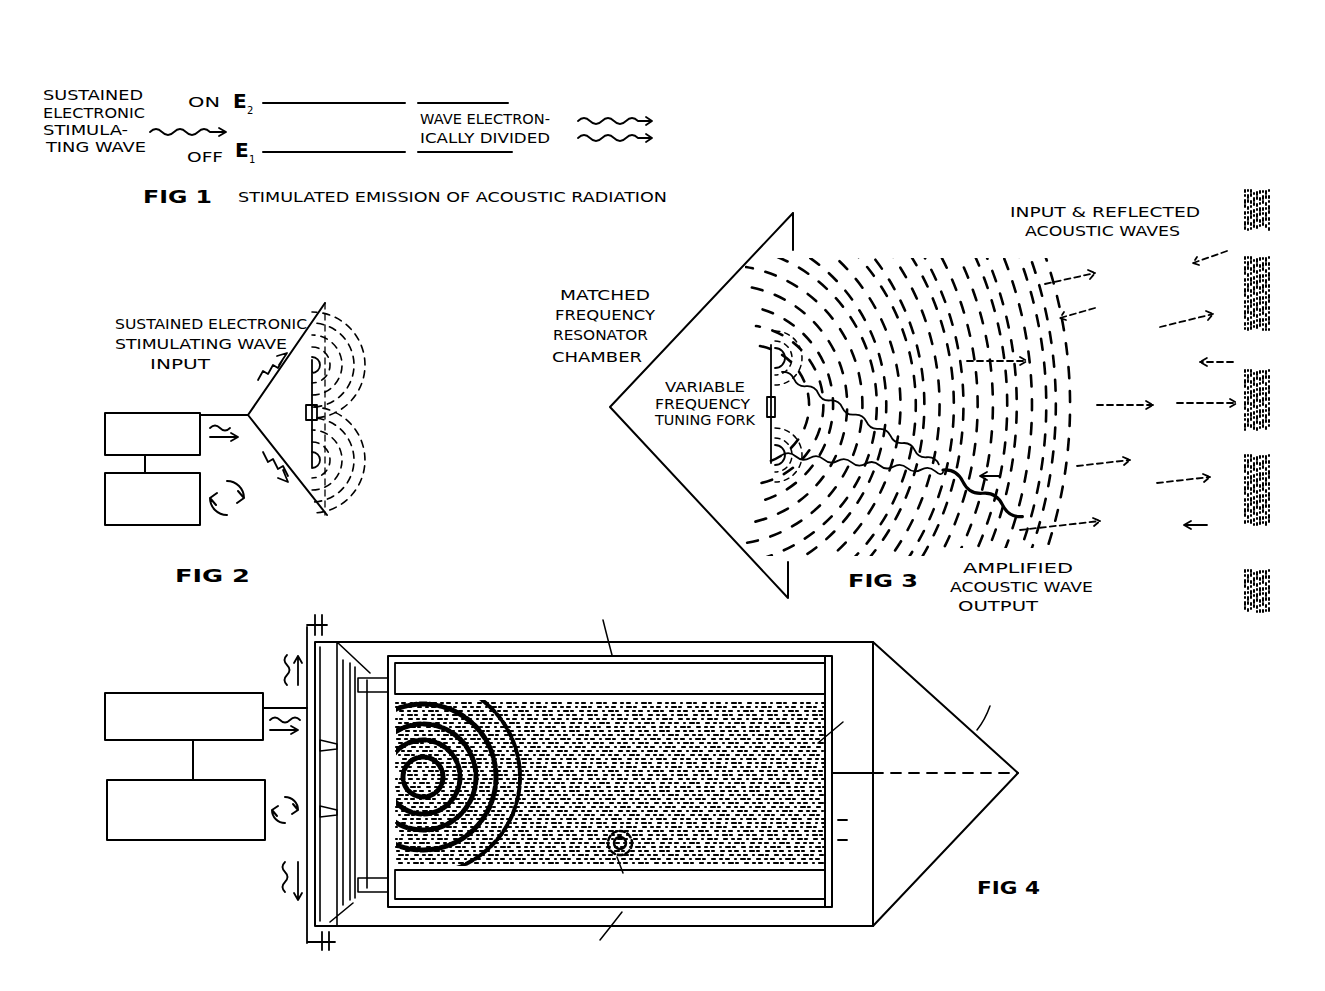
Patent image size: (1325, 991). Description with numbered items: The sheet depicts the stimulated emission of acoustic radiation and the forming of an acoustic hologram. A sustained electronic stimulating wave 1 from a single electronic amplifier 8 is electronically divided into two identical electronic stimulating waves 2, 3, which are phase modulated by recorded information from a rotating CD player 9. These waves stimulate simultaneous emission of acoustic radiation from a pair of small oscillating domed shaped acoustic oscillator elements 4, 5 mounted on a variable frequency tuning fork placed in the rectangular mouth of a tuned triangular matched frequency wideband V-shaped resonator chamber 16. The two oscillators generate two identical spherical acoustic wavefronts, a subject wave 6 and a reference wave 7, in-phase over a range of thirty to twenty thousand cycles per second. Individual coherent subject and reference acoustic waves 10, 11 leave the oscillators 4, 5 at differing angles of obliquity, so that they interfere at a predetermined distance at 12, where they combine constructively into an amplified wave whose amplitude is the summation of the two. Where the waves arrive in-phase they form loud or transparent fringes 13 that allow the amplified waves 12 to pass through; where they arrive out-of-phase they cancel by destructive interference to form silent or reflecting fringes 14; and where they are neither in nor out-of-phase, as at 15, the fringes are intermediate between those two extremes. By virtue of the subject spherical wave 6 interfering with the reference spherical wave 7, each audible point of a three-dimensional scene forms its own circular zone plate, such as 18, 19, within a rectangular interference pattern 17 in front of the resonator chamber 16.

In FIG. 1, the sustained electronic stimulating wave 1 is at (188, 145).
In FIG. 2, the sustained electronic stimulating wave 1 is at (224, 447).
In FIG. 4, the sustained electronic stimulating wave 1 is at (285, 741).
In FIG. 1, the electronic stimulating wave 2 is at (615, 106).
In FIG. 2, the electronic stimulating wave 2 is at (264, 378).
In FIG. 4, the electronic stimulating wave 2 is at (294, 681).
In FIG. 1, the electronic stimulating wave 3 is at (615, 150).
In FIG. 2, the electronic stimulating wave 3 is at (266, 456).
In FIG. 4, the electronic stimulating wave 3 is at (293, 868).
In FIG. 2, the acoustic dome oscillator 4 is at (306, 409).
In FIG. 3, the acoustic dome oscillator 4 is at (775, 397).
In FIG. 4, the acoustic dome oscillator 4 is at (610, 644).
In FIG. 2, the acoustic dome oscillator 5 is at (305, 457).
In FIG. 3, the acoustic dome oscillator 5 is at (775, 455).
In FIG. 4, the acoustic dome oscillator 5 is at (610, 910).
In FIG. 2, the subject wave 6 is at (338, 359).
In FIG. 3, the subject wave 6 is at (963, 429).
In FIG. 2, the reference wave 7 is at (338, 464).
In FIG. 3, the reference wave 7 is at (837, 542).
In FIG. 2, the electronic amplifier 8 is at (176, 418).
In FIG. 4, the electronic amplifier 8 is at (206, 700).
In FIG. 2, the rotating CD player 9 is at (174, 503).
In FIG. 4, the rotating CD player 9 is at (202, 805).
In FIG. 3, the subject acoustic wave 10 is at (860, 418).
In FIG. 3, the reference acoustic wave 11 is at (863, 474).
In FIG. 3, the amplified wave 12 is at (976, 493).
In FIG. 3, the transparent fringe 13 is at (1224, 587).
In FIG. 4, the transparent fringe 13 is at (856, 819).
In FIG. 3, the reflecting fringe 14 is at (1109, 507).
In FIG. 4, the reflecting fringe 14 is at (856, 839).
In FIG. 3, the intermediate fringe 15 is at (1224, 565).
In FIG. 2, the V-shaped resonator chamber 16 is at (287, 398).
In FIG. 3, the V-shaped resonator chamber 16 is at (701, 405).
In FIG. 4, the V-shaped resonator chamber 16 is at (666, 784).
In FIG. 3, the interference pattern 17 is at (1263, 432).
In FIG. 4, the interference pattern 17 is at (629, 781).
In FIG. 4, the circular zone plate 18 is at (420, 784).
In FIG. 4, the circular zone plate 19 is at (626, 863).